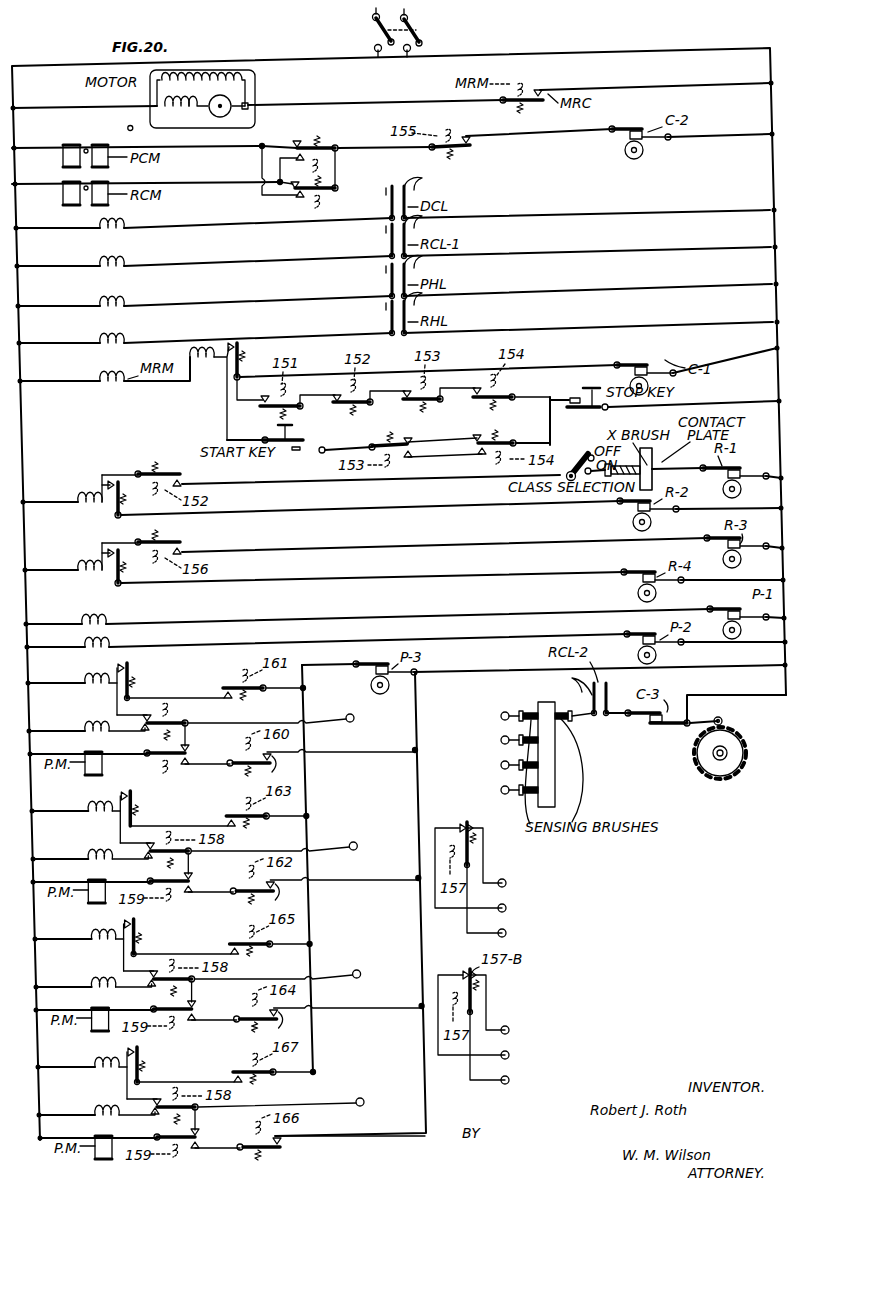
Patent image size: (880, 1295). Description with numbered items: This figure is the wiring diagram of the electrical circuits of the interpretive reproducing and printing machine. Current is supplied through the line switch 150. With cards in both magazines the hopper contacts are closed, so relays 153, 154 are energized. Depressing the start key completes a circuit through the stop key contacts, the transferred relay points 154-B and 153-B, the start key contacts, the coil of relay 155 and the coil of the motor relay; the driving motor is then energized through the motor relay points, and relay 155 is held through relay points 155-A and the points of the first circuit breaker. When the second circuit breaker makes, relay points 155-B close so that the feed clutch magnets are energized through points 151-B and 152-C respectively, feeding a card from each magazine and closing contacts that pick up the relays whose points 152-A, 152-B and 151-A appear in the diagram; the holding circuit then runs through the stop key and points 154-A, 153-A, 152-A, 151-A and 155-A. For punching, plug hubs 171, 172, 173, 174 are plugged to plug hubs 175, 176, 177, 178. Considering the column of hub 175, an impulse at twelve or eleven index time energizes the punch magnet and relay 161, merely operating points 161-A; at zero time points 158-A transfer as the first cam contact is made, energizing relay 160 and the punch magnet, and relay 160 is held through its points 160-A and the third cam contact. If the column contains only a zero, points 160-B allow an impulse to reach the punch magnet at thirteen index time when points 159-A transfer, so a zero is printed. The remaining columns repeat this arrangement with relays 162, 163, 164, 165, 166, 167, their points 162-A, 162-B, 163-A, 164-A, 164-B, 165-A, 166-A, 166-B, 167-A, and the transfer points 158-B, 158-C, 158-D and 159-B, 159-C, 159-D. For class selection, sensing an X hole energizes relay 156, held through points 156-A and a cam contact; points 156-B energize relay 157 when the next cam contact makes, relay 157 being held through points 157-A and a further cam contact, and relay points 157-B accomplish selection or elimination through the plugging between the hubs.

The line switch 150 is at (418, 26).
The relay points 151-A is at (261, 398).
The relay points 151-B is at (293, 147).
The relay points 152-A is at (331, 394).
The relay points 152-B is at (185, 480).
The relay points 152-C is at (297, 194).
The relay 153 is at (130, 302).
The relay points 153-A is at (401, 391).
The transferred relay points 153-B is at (440, 436).
The relay 154 is at (130, 340).
The relay points 154-A is at (474, 389).
The transferred relay points 154-B is at (475, 454).
The relay 155 is at (210, 353).
The relay points 155-A is at (238, 345).
The relay points 155-B is at (480, 140).
The relay 156 is at (83, 495).
The relay points 156-A is at (103, 478).
The relay points 156-B is at (185, 548).
The relay 157 is at (83, 563).
The relay points 157-A is at (110, 534).
The relay points 157-B is at (468, 827).
The relay points 158-A is at (142, 728).
The relay points 158-B is at (230, 855).
The relay points 158-C is at (222, 981).
The relay points 158-D is at (237, 1111).
The relay points 159-A is at (194, 773).
The relay points 159-B is at (133, 888).
The relay points 159-C is at (138, 1016).
The relay points 159-D is at (141, 1144).
The relay 160 is at (88, 683).
The relay points 160-A is at (122, 661).
The relay points 160-B is at (280, 777).
The relay 161 is at (85, 728).
The relay points 161-A is at (224, 688).
The relay 162 is at (75, 815).
The relay points 162-A is at (122, 661).
The relay points 162-B is at (325, 896).
The relay 163 is at (72, 848).
The relay points 163-A is at (219, 813).
The relay 164 is at (79, 943).
The relay points 164-A is at (156, 940).
The relay points 164-B is at (329, 1024).
The relay 165 is at (76, 976).
The relay points 165-A is at (223, 941).
The relay 166 is at (82, 1071).
The relay points 166-A is at (159, 1068).
The relay points 166-B is at (331, 1149).
The relay 167 is at (79, 1104).
The relay points 167-A is at (226, 1069).
The plug hub 171 is at (501, 716).
The plug hub 172 is at (501, 740).
The plug hub 173 is at (501, 765).
The plug hub 174 is at (501, 790).
The plug hub 175 is at (354, 718).
The plug hub 176 is at (371, 846).
The plug hub 177 is at (375, 974).
The plug hub 178 is at (378, 1102).